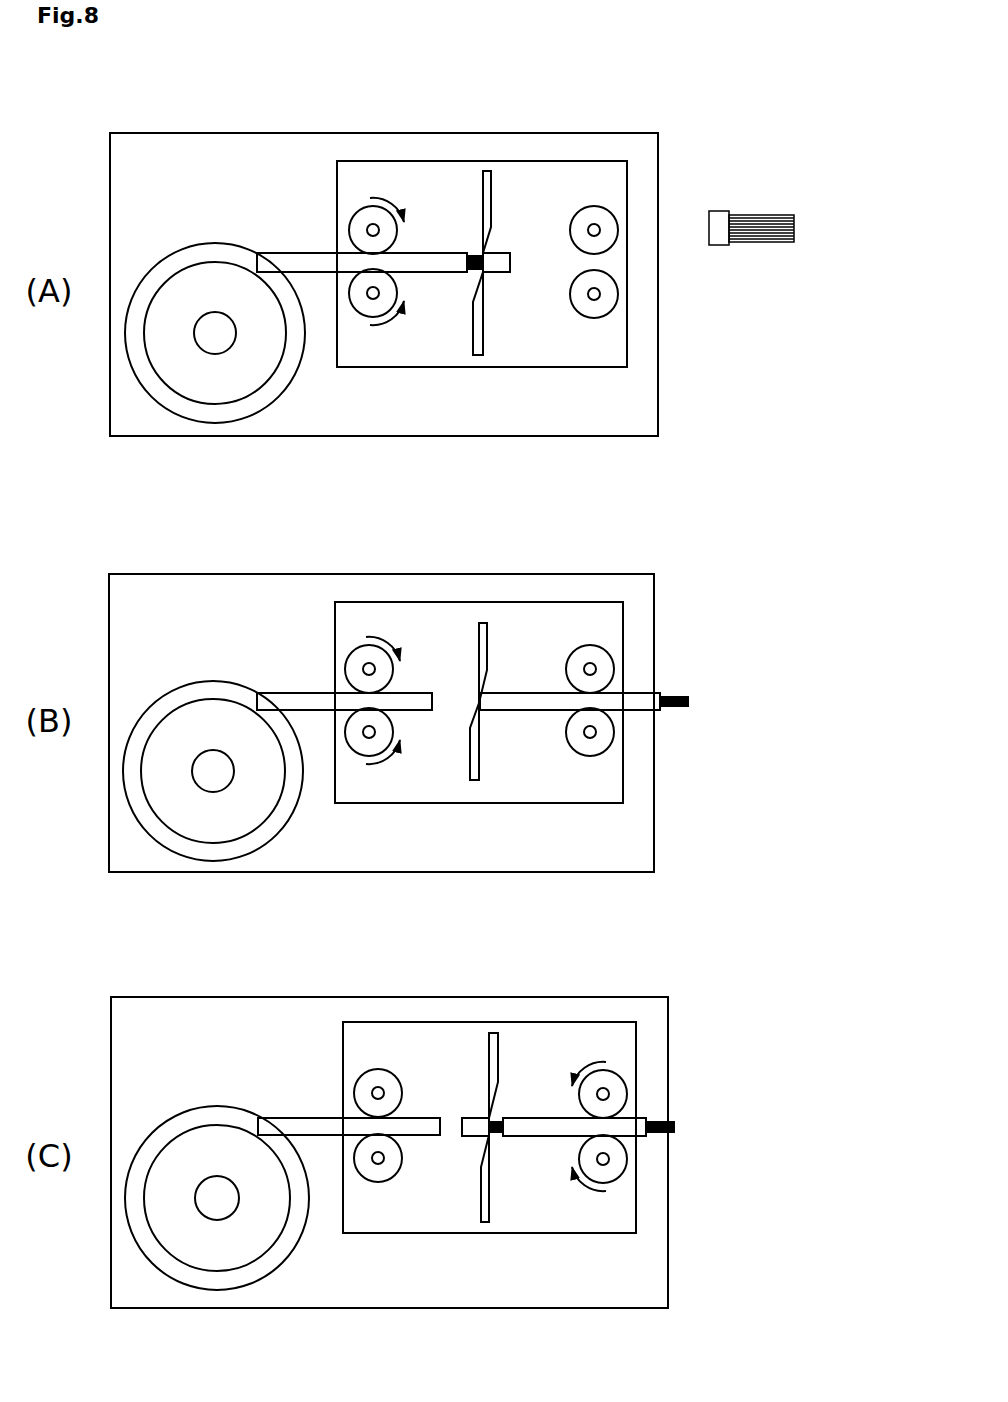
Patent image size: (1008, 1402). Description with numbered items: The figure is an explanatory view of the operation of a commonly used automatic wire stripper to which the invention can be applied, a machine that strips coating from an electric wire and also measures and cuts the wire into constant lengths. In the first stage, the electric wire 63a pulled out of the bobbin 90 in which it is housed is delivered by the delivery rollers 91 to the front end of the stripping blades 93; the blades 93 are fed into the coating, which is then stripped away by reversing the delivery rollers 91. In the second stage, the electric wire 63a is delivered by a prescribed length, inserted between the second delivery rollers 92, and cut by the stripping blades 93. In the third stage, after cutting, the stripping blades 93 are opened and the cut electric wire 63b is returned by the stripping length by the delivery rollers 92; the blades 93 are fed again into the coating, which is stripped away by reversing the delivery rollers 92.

The bobbin 90 is at (187, 247).
The electric wire 63a is at (302, 252).
The cut electric wire 63b is at (538, 690).
The delivery rollers 91 is at (360, 208).
The delivery rollers 92 is at (597, 205).
The stripping blades 93 is at (478, 197).